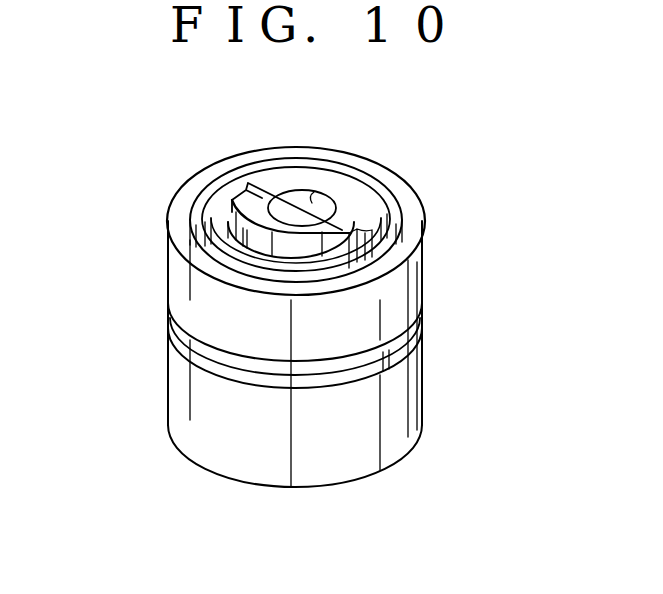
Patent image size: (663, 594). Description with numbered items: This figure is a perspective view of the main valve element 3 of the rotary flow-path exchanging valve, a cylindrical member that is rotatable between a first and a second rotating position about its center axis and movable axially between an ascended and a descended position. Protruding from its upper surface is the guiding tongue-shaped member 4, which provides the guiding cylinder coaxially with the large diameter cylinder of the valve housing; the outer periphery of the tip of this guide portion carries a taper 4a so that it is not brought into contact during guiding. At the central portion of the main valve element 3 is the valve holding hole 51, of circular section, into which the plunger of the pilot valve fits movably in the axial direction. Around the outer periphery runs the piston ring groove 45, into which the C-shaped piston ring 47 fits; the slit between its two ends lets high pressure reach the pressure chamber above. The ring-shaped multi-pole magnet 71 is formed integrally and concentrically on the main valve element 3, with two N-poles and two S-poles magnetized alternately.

The main valve element 3 is at (168, 375).
The guiding tongue-shaped member 4 is at (243, 230).
The taper 4a is at (247, 207).
The piston ring groove 45 is at (343, 377).
The C-shaped piston ring 47 is at (403, 352).
The valve holding hole 51 is at (310, 188).
The multi-pole magnet 71 is at (415, 283).